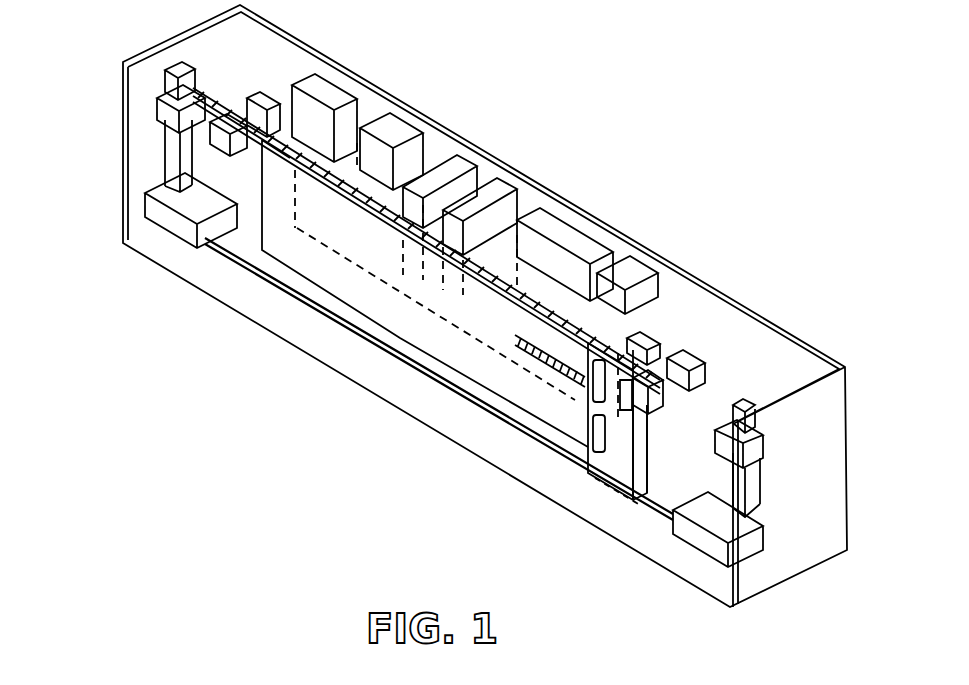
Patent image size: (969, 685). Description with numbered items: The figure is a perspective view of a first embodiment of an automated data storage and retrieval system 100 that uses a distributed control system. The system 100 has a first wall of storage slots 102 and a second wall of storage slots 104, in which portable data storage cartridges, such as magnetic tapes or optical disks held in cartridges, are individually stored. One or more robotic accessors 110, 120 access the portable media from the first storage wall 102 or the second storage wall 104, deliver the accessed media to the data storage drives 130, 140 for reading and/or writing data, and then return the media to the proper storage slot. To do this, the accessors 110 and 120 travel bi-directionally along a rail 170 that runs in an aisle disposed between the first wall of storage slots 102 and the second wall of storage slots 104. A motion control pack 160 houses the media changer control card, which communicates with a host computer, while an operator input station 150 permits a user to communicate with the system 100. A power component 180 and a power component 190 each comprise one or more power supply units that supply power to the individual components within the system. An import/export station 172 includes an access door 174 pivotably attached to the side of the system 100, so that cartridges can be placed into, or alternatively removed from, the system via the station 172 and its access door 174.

The automated data storage and retrieval system 100 is at (541, 517).
The first wall of storage slots 102 is at (363, 170).
The second wall of storage slots 104 is at (336, 285).
The accessor 110 is at (160, 101).
The accessor 120 is at (763, 433).
The data storage drive 130 is at (458, 158).
The data storage drive 140 is at (500, 183).
The operator input station 150 is at (402, 126).
The motion control pack 160 is at (346, 96).
The rail 170 is at (400, 358).
The import/export station 172 is at (637, 493).
The access door 174 is at (610, 467).
The power component 180 is at (700, 354).
The power component 190 is at (667, 412).